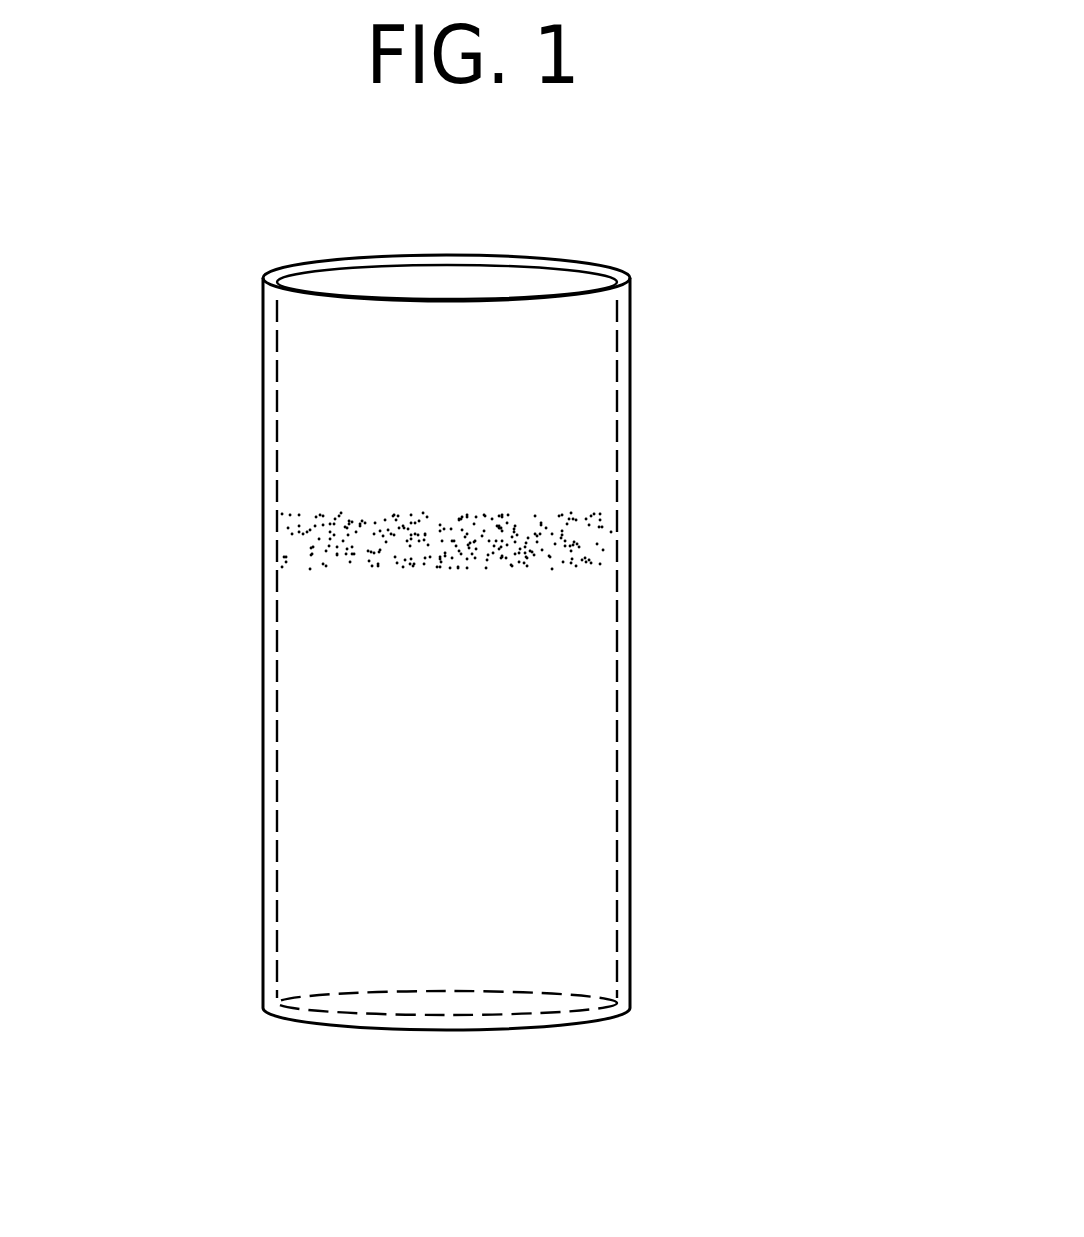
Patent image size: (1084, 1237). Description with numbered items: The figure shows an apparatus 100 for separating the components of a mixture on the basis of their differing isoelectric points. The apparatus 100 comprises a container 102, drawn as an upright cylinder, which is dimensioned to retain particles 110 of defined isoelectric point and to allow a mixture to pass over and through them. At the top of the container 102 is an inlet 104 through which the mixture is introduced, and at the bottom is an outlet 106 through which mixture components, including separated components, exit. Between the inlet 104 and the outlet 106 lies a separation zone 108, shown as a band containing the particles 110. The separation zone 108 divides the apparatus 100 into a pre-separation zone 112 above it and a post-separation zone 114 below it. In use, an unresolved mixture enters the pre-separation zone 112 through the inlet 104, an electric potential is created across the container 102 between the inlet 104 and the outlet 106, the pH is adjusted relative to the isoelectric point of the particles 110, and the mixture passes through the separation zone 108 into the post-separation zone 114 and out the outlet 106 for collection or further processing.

The apparatus 100 is at (501, 638).
The container 102 is at (256, 368).
The inlet 104 is at (494, 246).
The outlet 106 is at (450, 1031).
The separation zone 108 is at (535, 592).
The particles 110 is at (555, 517).
The pre-separation zone 112 is at (585, 355).
The post-separation zone 114 is at (523, 800).